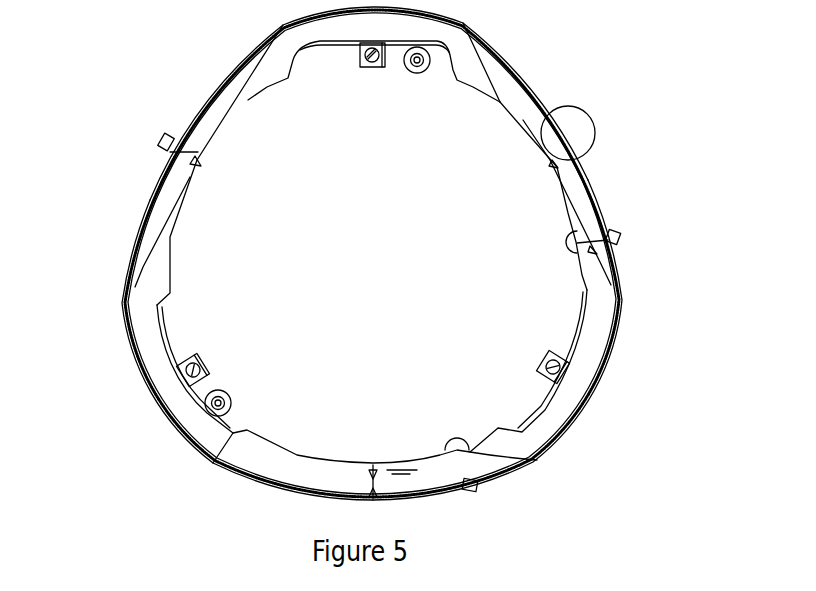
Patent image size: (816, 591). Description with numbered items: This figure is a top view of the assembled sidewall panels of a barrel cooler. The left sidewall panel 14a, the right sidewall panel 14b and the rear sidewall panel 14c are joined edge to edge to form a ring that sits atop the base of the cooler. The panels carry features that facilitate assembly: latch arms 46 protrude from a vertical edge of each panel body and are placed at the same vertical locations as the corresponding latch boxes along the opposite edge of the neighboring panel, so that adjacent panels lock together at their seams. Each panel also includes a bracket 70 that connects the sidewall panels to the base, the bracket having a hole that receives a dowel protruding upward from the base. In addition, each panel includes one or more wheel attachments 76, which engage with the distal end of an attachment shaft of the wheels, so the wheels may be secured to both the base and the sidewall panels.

The left sidewall panel 14a is at (147, 381).
The right sidewall panel 14b is at (607, 362).
The rear sidewall panel 14c is at (283, 25).
The latch arms 46 is at (591, 105).
The bracket 70 is at (383, 67).
The wheel attachments 76 is at (422, 73).